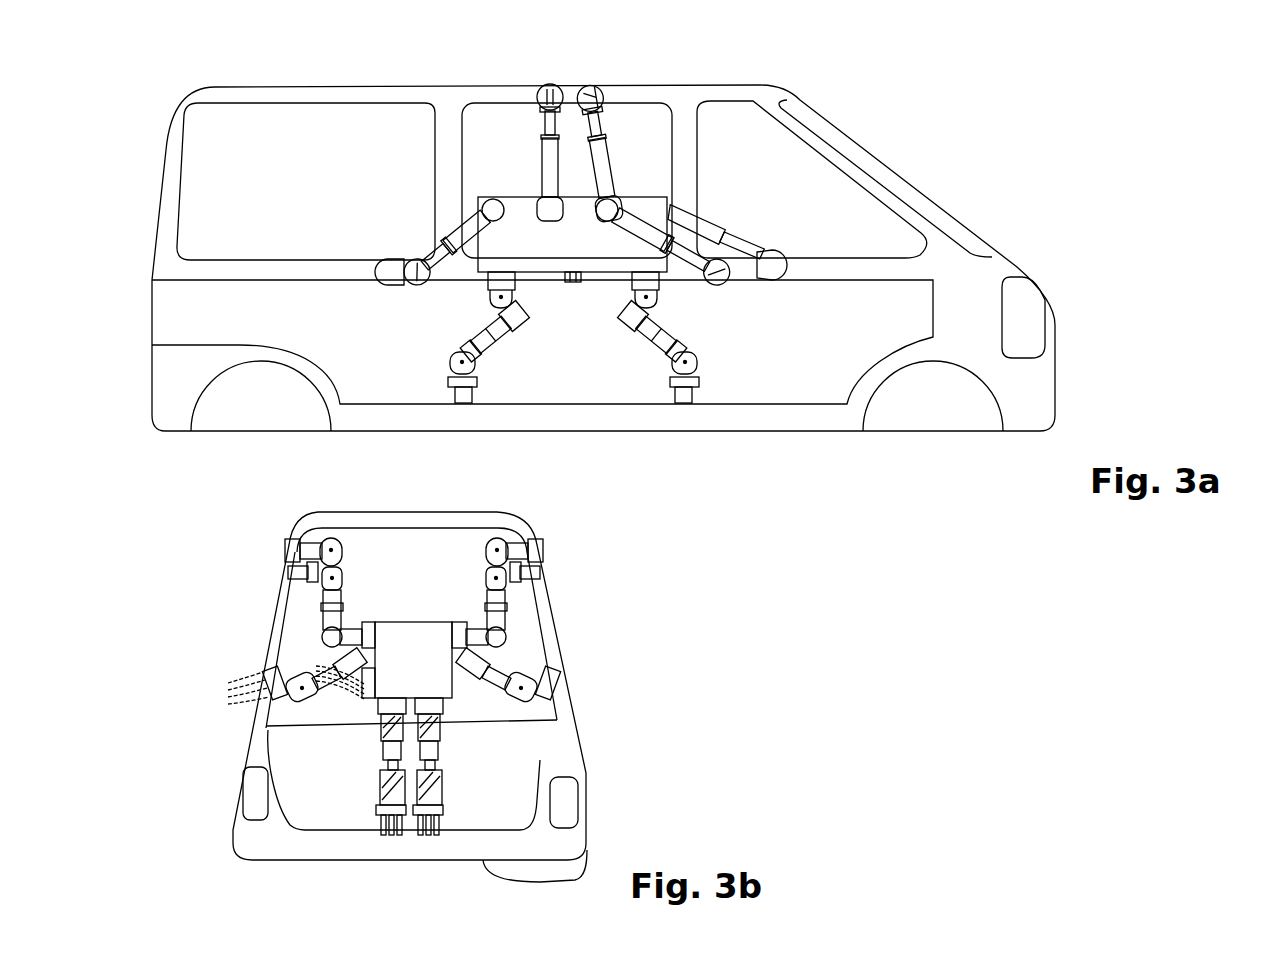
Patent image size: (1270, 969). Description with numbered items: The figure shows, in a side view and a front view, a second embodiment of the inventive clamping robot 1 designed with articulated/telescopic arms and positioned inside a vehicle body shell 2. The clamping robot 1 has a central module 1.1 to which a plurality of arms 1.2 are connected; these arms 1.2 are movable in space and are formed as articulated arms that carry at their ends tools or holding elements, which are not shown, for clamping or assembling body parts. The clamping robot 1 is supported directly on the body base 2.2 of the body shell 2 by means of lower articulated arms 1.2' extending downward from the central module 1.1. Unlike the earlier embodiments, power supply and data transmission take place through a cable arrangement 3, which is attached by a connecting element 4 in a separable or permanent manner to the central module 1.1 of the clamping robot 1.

In FIG. 3A, the clamping robot 1 is at (623, 175).
In FIG. 3B, the clamping robot 1 is at (527, 657).
In FIG. 3A, the central module 1.1 is at (503, 197).
In FIG. 3B, the central module 1.1 is at (432, 623).
In FIG. 3A, the arms 1.2 is at (581, 164).
In FIG. 3B, the arms 1.2 is at (350, 621).
In FIG. 3A, the lower articulated arms 1.2' is at (564, 413).
In FIG. 3B, the lower articulated arms 1.2' is at (323, 802).
In FIG. 3A, the body shell 2 is at (1025, 240).
In FIG. 3B, the body shell 2 is at (610, 762).
In FIG. 3A, the body base 2.2 is at (780, 420).
In FIG. 3B, the body base 2.2 is at (540, 880).
In FIG. 3A, the cable arrangement 3 is at (573, 283).
In FIG. 3B, the cable arrangement 3 is at (227, 707).
In FIG. 3B, the connecting element 4 is at (357, 698).